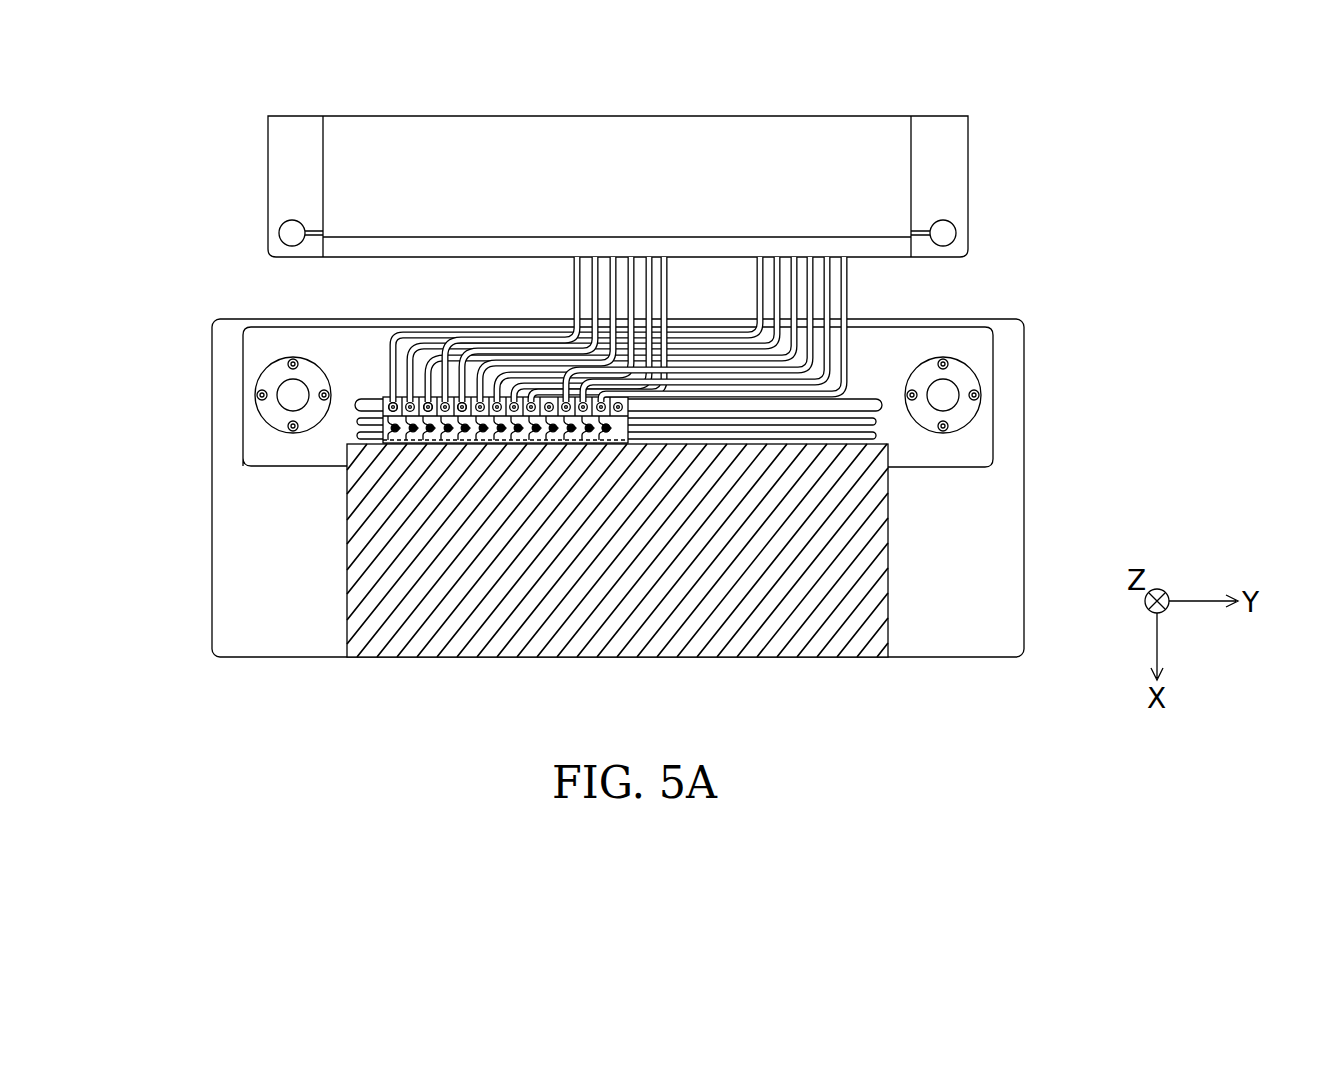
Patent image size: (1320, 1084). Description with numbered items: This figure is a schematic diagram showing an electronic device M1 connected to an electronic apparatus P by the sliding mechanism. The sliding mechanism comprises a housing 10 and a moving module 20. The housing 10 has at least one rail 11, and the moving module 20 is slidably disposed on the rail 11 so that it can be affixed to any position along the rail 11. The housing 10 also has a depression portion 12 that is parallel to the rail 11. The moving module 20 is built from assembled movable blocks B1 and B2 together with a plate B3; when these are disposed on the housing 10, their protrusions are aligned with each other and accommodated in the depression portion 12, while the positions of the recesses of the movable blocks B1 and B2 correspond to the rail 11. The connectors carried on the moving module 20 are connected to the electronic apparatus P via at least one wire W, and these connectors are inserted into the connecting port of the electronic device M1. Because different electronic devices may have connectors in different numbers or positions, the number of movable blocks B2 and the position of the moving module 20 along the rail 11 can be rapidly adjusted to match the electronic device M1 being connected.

The electronic apparatus P is at (903, 166).
The wire W is at (843, 305).
The housing 10 is at (985, 348).
The rail 11 is at (862, 404).
The depression portion 12 is at (866, 432).
The moving module 20 is at (385, 426).
The electronic device M1 is at (372, 542).
The movable block B1 is at (390, 402).
The movable block B2 is at (460, 402).
The plate B3 is at (615, 428).